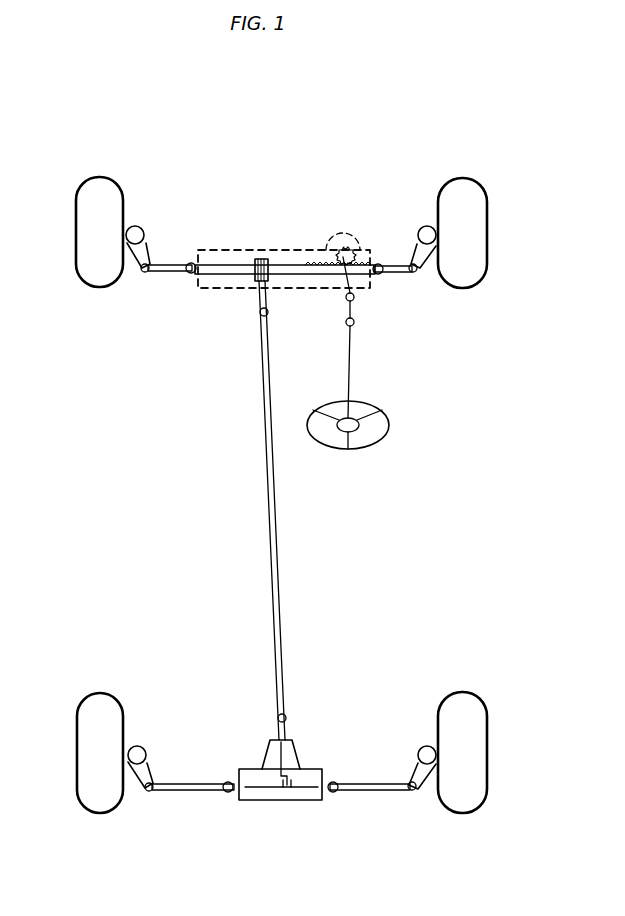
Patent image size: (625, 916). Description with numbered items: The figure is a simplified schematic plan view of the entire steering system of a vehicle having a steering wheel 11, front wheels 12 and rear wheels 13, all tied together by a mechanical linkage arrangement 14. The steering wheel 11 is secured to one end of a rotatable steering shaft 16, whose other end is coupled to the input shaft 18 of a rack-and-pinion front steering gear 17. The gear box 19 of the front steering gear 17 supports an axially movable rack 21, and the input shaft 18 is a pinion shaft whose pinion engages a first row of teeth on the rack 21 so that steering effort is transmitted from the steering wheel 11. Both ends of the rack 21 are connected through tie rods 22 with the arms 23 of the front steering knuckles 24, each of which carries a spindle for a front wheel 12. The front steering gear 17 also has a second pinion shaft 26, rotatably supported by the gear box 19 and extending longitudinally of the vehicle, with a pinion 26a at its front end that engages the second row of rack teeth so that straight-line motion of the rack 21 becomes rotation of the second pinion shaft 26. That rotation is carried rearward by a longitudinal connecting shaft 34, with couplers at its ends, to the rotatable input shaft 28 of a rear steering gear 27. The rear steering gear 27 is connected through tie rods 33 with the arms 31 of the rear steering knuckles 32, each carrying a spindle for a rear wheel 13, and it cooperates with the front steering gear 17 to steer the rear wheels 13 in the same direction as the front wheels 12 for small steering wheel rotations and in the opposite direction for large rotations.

The steering wheel 11 is at (380, 437).
The front wheels 12 is at (88, 201).
The rear wheels 13 is at (89, 796).
The linkage arrangement 14 is at (172, 437).
The steering shaft 16 is at (350, 371).
The front steering gear 17 is at (325, 230).
The input shaft 18 is at (348, 284).
The gear box 19 is at (268, 258).
The rack 21 is at (294, 272).
The tie rods 22 is at (166, 274).
The arms 23 is at (143, 251).
The steering knuckles 24 is at (132, 231).
The second pinion shaft 26 is at (259, 297).
The pinion 26a is at (257, 260).
The rear steering gear 27 is at (284, 805).
The input shaft 28 is at (280, 731).
The arms 31 is at (148, 768).
The steering knuckles 32 is at (138, 749).
The tie rods 33 is at (193, 793).
The connecting shaft 34 is at (272, 527).